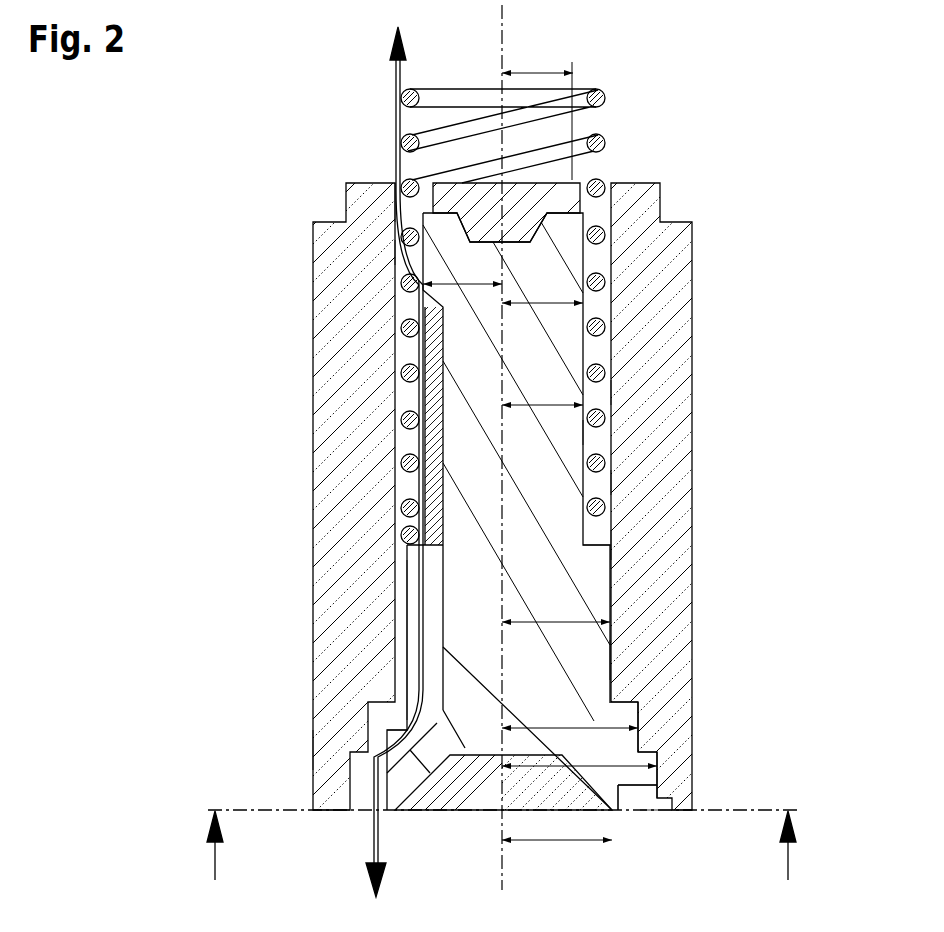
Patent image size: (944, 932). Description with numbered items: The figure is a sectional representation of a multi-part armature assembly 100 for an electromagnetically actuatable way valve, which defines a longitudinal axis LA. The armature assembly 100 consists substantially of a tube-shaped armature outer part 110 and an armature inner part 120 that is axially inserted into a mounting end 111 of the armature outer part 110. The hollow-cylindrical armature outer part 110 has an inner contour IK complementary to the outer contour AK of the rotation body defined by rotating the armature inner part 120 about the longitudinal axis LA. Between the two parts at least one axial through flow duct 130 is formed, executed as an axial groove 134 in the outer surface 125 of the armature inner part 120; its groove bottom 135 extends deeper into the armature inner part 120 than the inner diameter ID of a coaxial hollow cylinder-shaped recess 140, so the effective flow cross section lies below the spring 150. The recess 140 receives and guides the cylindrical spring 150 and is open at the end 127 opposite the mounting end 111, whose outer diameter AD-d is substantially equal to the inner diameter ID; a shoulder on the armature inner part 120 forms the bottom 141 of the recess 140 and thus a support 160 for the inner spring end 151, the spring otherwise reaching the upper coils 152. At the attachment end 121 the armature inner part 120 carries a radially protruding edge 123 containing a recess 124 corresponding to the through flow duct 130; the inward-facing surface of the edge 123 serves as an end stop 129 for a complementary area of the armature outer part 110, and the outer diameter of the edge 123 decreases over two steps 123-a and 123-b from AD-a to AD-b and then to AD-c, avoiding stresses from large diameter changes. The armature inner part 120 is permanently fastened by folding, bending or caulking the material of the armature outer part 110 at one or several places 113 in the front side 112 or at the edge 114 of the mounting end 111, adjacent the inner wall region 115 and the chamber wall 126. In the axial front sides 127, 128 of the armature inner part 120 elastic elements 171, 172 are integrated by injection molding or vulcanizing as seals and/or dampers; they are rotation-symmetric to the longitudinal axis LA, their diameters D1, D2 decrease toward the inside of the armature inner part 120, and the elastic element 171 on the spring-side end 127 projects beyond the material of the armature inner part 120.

The multi-part armature assembly 100 is at (290, 128).
The armature outer part 110 is at (655, 292).
The mounting end 111 is at (323, 812).
The front side 112 is at (690, 812).
The places 113 is at (655, 812).
The edge 114 is at (313, 750).
The housing inner wall 115 is at (605, 480).
The armature inner part 120 is at (570, 663).
The attachment end 121 is at (405, 720).
The radially protruding edge 123 is at (785, 705).
The first step 123-a is at (660, 777).
The second step 123-b is at (640, 740).
The recess 124 is at (398, 462).
The outer surface 125 is at (398, 252).
The spring chamber wall 126 is at (600, 392).
The end of the armature inner part opposite the mounting end 127 is at (395, 198).
The axial front side 128 is at (618, 812).
The end stop 129 is at (635, 710).
The axial through flow duct 130 is at (440, 403).
The axial groove 134 is at (418, 583).
The groove bottom 135 is at (440, 483).
The hollow cylinder-shaped recess 140 is at (595, 432).
The bottom 141 is at (620, 546).
The spring 150 is at (420, 296).
The inner spring end 151 is at (398, 545).
The spring upper end 152 is at (455, 95).
The support 160 is at (600, 537).
The elastic element 171 is at (395, 800).
The elastic element 172 is at (535, 190).
The longitudinal axis LA is at (505, 18).
The outer contour AK is at (402, 285).
The inner contour IK is at (415, 305).
The diameter of elastic element D1 is at (557, 828).
The diameter of elastic element D2 is at (537, 113).
The inner diameter ID is at (542, 390).
The outer diameter AD-a is at (579, 752).
The outer diameter AD-b is at (570, 713).
The outer diameter AD-c is at (556, 607).
The outer diameter AD-d is at (503, 279).